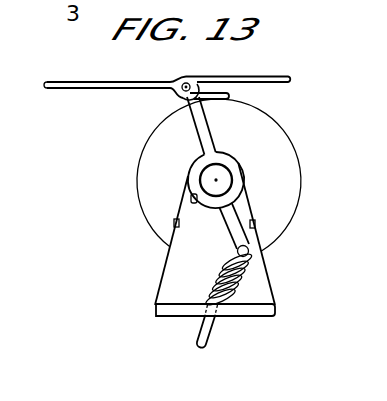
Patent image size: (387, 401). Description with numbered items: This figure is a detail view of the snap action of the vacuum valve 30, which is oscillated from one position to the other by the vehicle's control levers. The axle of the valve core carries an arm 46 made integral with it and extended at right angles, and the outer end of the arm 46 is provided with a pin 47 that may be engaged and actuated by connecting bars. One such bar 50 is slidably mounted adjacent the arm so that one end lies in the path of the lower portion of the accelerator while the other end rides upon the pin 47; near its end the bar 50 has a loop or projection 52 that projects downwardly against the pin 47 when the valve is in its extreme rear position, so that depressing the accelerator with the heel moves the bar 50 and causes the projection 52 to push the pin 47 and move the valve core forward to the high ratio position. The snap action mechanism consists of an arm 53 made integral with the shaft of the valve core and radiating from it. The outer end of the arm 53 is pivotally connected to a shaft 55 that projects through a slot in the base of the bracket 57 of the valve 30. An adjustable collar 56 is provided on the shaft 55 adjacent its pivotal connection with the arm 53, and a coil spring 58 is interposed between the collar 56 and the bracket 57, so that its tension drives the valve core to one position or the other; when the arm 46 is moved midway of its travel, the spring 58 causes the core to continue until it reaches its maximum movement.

The valve 30 is at (225, 175).
The arm 46 is at (198, 132).
The pin 47 is at (190, 84).
The bar 50 is at (112, 86).
The loop or projection 52 is at (180, 99).
The arm 53 is at (232, 212).
The shaft 55 is at (203, 322).
The adjustable collar 56 is at (245, 262).
The bracket 57 is at (168, 273).
The coil spring 58 is at (238, 283).